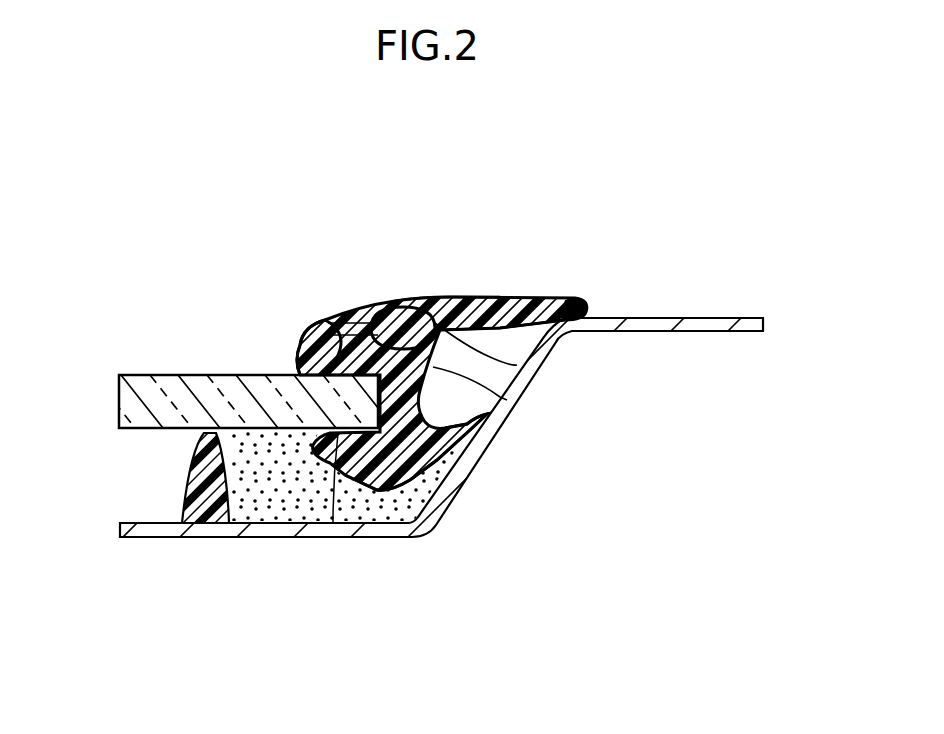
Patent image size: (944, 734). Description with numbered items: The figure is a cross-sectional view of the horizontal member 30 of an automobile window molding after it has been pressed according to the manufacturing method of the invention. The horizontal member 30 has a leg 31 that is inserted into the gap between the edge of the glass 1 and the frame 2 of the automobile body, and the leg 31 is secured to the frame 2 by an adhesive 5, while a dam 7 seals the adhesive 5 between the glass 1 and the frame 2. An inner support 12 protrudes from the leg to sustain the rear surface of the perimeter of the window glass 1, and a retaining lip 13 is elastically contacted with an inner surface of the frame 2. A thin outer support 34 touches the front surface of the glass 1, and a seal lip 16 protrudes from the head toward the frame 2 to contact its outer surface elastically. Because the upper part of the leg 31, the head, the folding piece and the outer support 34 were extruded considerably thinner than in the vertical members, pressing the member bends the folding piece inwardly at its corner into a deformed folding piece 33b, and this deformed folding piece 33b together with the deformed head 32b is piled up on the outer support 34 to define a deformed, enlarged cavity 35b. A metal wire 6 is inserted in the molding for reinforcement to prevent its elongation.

The glass 1 is at (125, 405).
The frame 2 is at (662, 320).
The adhesive 5 is at (283, 527).
The metal wire 6 is at (507, 400).
The dam 7 is at (210, 527).
The inner support 12 is at (333, 527).
The retaining lip 13 is at (487, 427).
The seal lip 16 is at (550, 310).
The horizontal member 30 is at (497, 297).
The leg 31 is at (457, 463).
The deformed head 32b is at (460, 268).
The deformed folding piece 33b is at (317, 323).
The outer support 34 is at (303, 329).
The deformed, enlarged cavity 35b is at (517, 365).